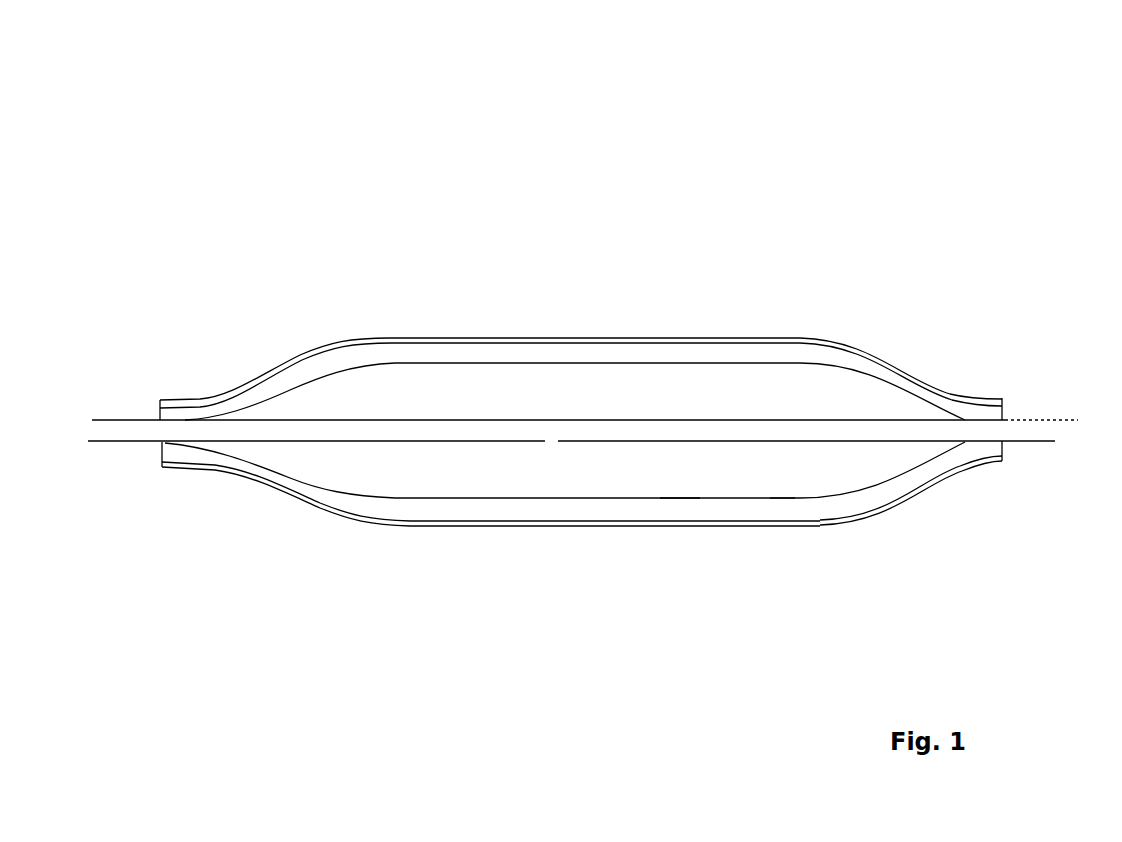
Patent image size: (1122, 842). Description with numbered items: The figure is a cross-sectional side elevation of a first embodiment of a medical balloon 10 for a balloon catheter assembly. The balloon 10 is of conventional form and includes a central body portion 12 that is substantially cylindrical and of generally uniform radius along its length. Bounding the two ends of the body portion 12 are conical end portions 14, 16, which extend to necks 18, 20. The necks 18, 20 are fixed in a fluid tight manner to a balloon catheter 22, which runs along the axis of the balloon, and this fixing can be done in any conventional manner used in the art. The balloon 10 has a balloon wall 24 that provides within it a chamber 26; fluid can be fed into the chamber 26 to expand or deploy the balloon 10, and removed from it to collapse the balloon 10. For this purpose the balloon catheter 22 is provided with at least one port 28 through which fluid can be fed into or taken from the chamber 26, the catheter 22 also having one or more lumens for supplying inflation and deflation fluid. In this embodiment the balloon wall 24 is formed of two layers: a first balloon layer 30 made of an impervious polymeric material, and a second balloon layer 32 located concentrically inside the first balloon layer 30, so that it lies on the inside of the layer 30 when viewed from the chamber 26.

The medical balloon 10 is at (957, 128).
The central body portion 12 is at (856, 298).
The conical end portion 14 is at (1008, 298).
The conical end portion 16 is at (354, 298).
The neck 18 is at (1009, 383).
The neck 20 is at (156, 386).
The balloon catheter 22 is at (1043, 449).
The balloon wall 24 is at (677, 468).
The chamber 26 is at (782, 466).
The port 28 is at (557, 454).
The first balloon layer 30 is at (518, 533).
The second balloon layer 32 is at (452, 514).